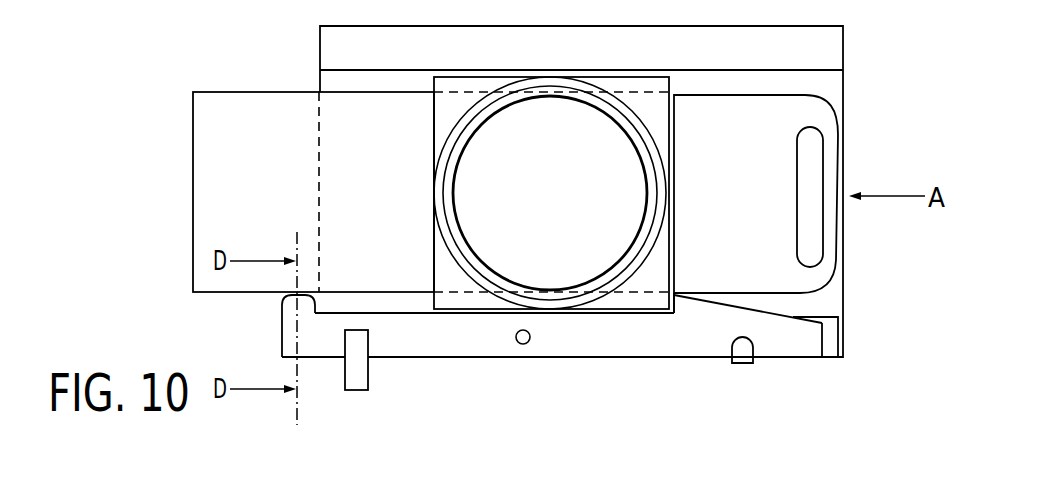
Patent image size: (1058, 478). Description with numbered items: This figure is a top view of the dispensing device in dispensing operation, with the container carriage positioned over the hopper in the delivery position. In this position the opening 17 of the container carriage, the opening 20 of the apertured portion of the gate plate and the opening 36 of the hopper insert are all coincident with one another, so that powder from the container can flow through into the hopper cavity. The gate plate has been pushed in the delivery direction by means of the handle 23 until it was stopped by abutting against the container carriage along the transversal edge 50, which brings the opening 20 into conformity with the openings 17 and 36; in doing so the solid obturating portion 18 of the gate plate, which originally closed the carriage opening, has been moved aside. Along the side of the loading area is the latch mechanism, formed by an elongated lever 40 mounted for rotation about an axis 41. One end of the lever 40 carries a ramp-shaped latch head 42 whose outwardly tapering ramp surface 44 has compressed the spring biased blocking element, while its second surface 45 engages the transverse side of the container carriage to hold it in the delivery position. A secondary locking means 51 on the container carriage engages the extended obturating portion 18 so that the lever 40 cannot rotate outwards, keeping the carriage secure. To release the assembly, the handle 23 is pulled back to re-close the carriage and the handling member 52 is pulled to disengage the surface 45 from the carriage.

The opening 17 is at (626, 152).
The obturating portion 18 is at (212, 224).
The opening 20 is at (627, 197).
The handle 23 is at (817, 242).
The opening 36 is at (602, 235).
The lever 40 is at (577, 343).
The axis 41 is at (517, 343).
The latch head 42 is at (790, 344).
The ramp surface 44 is at (767, 312).
The second surface 45 is at (676, 305).
The transversal edge 50 is at (675, 229).
The secondary locking means 51 is at (268, 325).
The handling member 52 is at (743, 352).